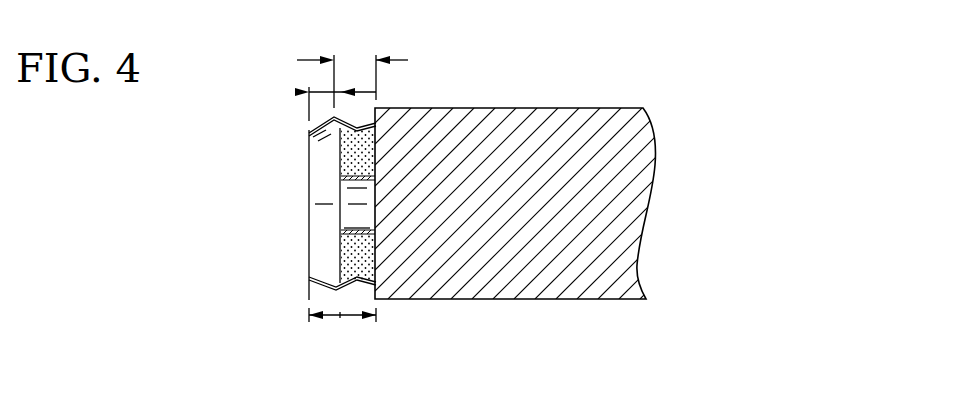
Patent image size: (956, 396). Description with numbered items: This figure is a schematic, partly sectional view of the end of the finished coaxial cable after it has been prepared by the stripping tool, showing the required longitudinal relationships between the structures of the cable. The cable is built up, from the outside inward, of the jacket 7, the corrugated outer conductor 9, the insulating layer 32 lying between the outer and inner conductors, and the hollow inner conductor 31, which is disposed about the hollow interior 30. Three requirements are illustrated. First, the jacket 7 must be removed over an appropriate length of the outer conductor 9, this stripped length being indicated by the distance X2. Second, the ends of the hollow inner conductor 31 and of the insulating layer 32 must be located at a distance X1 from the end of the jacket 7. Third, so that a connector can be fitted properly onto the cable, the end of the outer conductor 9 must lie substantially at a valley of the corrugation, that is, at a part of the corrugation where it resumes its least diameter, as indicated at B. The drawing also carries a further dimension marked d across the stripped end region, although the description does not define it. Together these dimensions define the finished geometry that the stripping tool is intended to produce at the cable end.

The jacket 7 is at (627, 167).
The outer conductor 9 is at (323, 283).
The hollow interior 30 is at (357, 217).
The hollow inner conductor 31 is at (355, 172).
The insulating layer 32 is at (352, 260).
The valley of the corrugation B is at (311, 131).
The coating thickness d is at (296, 92).
The distance X1 is at (407, 60).
The distance X2 is at (340, 316).